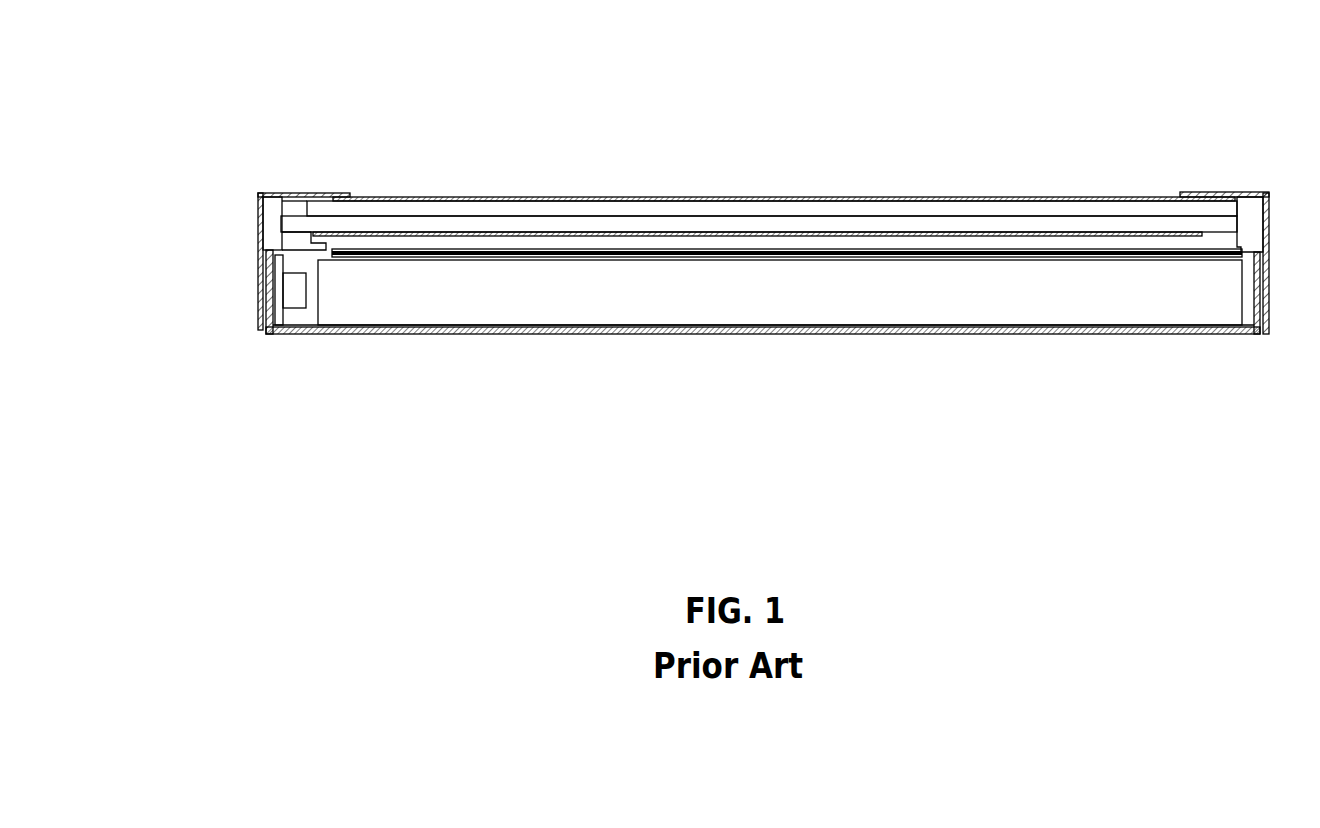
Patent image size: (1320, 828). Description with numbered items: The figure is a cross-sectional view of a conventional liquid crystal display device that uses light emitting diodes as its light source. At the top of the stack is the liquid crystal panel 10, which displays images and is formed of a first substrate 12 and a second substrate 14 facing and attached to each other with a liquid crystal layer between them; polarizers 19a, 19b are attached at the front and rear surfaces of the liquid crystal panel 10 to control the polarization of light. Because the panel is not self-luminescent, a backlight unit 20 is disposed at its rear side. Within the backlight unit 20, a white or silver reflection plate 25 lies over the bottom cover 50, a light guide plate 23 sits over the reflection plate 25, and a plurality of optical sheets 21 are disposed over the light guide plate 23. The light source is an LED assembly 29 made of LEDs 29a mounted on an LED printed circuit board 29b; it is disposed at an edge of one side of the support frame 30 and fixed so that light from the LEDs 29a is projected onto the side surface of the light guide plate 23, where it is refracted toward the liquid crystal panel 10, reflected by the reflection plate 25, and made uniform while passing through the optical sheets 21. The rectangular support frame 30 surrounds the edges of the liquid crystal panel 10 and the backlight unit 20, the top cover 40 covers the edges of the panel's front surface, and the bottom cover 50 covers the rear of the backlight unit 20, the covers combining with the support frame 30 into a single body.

The liquid crystal panel 10 is at (759, 149).
The first substrate 12 is at (795, 222).
The second substrate 14 is at (738, 204).
The polarizer 19a is at (1003, 232).
The polarizer 19b is at (955, 197).
The backlight unit 20 is at (743, 370).
The optical sheets 21 is at (412, 258).
The light guide plate 23 is at (365, 315).
The reflection plate 25 is at (460, 335).
The LED assembly 29 is at (277, 352).
The LEDs 29a is at (294, 308).
The LED printed circuit board 29b is at (283, 308).
The support frame 30 is at (268, 232).
The top cover 40 is at (1217, 192).
The bottom cover 50 is at (645, 335).